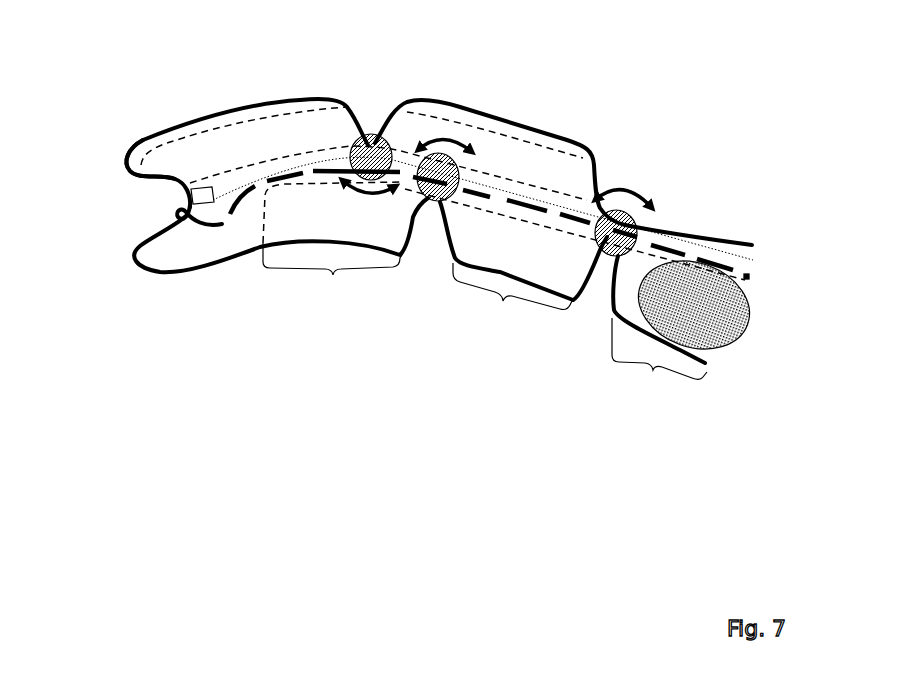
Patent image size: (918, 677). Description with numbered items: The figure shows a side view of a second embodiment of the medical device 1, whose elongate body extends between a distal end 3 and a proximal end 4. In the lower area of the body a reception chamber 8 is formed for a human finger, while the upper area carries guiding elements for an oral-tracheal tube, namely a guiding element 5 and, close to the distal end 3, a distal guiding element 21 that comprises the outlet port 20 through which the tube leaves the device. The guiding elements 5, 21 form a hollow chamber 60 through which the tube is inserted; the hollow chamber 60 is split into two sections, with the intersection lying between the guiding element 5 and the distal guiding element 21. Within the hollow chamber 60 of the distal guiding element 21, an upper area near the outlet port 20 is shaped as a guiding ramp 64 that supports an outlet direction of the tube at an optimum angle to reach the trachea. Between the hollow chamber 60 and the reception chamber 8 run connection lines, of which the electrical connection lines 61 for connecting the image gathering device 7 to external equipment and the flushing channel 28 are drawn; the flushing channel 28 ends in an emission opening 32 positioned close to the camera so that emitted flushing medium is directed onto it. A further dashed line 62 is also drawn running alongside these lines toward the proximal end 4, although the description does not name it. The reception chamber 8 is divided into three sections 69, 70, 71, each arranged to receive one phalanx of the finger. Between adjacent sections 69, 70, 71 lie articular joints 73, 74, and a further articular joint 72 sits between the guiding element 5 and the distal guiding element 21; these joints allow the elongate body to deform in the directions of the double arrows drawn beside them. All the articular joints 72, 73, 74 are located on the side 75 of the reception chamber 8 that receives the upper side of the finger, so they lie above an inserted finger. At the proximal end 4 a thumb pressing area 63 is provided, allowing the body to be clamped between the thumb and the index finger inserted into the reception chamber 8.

The medical device 1 is at (616, 58).
The distal end 3 is at (97, 135).
The proximal end 4 is at (796, 240).
The guiding element 5 is at (483, 114).
The image gathering device 7 is at (191, 197).
The reception chamber 8 is at (588, 270).
The outlet port 20 is at (150, 180).
The distal guiding element 21 is at (205, 114).
The flushing channel 28 is at (750, 278).
The emission opening 32 is at (180, 210).
The hollow chamber 60 is at (283, 130).
The electrical connection lines 61 is at (753, 260).
The lumen 62 is at (742, 284).
The thumb pressing area 63 is at (745, 333).
The guiding ramp 64 is at (142, 162).
The section of reception chamber 69 is at (333, 272).
The section of reception chamber 70 is at (513, 296).
The section of reception chamber 71 is at (659, 322).
The articular joint 72 is at (370, 143).
The articular joint 73 is at (437, 203).
The articular joint 74 is at (616, 211).
The side of reception chamber 75 is at (550, 223).